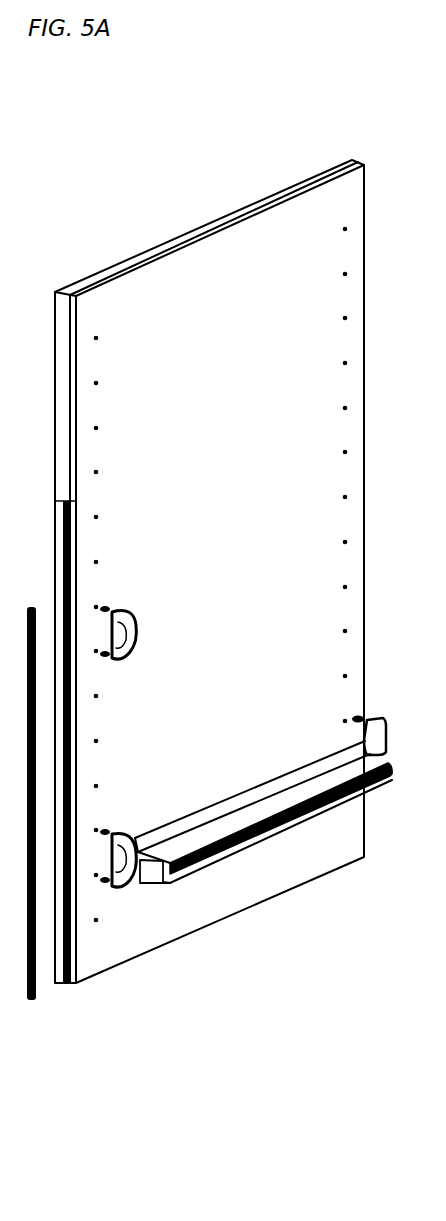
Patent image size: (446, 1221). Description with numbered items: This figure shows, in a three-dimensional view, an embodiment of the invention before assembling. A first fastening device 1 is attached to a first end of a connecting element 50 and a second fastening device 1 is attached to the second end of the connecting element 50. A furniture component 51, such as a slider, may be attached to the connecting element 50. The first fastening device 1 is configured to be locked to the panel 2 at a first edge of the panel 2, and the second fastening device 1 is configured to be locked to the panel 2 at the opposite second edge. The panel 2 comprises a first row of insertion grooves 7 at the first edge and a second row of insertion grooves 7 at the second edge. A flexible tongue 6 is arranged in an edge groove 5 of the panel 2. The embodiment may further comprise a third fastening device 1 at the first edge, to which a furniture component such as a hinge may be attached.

The fastening device 1 is at (136, 611).
The panel 2 is at (388, 260).
The edge groove 5 is at (362, 163).
The flexible tongue 6 is at (30, 600).
The insertion groove 7 is at (100, 428).
The connecting element 50 is at (256, 795).
The furniture component 51 is at (265, 835).